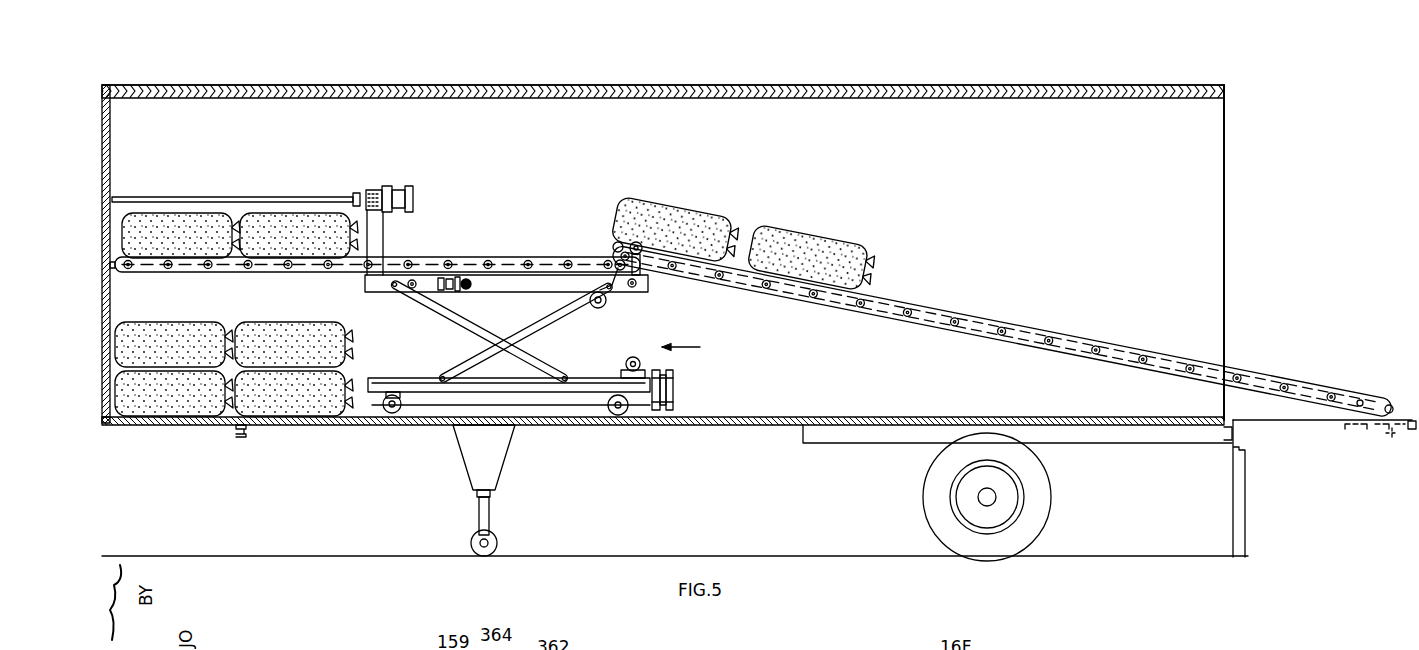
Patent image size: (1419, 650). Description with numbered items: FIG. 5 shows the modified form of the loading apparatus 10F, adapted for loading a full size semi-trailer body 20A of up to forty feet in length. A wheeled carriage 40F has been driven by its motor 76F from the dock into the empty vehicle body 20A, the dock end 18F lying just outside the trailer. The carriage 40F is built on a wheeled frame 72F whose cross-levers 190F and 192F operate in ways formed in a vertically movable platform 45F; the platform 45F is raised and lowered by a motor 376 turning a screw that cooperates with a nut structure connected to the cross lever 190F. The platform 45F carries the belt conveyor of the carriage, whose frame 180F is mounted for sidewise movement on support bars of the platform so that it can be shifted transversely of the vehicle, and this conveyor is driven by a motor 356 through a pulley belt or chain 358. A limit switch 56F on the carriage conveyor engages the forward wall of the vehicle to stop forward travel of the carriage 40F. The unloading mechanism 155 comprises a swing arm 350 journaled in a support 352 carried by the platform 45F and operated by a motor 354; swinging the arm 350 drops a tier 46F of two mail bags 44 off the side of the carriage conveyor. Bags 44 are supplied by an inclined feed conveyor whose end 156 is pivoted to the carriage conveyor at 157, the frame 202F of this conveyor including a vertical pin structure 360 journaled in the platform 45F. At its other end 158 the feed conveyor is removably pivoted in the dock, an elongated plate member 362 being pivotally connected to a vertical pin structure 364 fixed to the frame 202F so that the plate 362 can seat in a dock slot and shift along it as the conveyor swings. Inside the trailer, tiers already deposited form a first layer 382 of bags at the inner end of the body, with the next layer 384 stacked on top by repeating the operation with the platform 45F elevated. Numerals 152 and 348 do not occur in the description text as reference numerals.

The modified form of the apparatus 10F is at (1076, 114).
The semi-trailer body 20A is at (1228, 87).
The dock end 18F is at (1024, 490).
The dock plate 152 is at (1368, 440).
The elongated plate member 362 is at (1396, 430).
The vertical pin structure 364 is at (1392, 404).
The end of conveyor 158 is at (1348, 398).
The end of conveyor 156 is at (680, 270).
The conveyor frame 202F is at (1008, 338).
The pivot 157 is at (652, 246).
The motor 358 is at (625, 258).
The vertical pin structure 360 is at (638, 268).
The mail bags 44 is at (762, 224).
The tier of bags 46F is at (874, 247).
The next layer of bags 384 is at (205, 335).
The first layer of bags 382 is at (112, 400).
The swing arm 350 is at (253, 196).
The unloading mechanism 155 is at (375, 179).
The motor 354 is at (414, 197).
The support 352 is at (383, 244).
The conveyor frame 180F is at (462, 258).
The limit switch 56F is at (118, 273).
The upper platform 348 is at (518, 288).
The vertically movable platform 45F is at (646, 296).
The motor 356 is at (604, 310).
The cross-lever 190F is at (442, 318).
The cross-lever 192F is at (542, 338).
The wheeled frame 72F is at (585, 400).
The motor 76F is at (672, 407).
The motor 376 is at (645, 362).
The carriage 40F is at (697, 352).